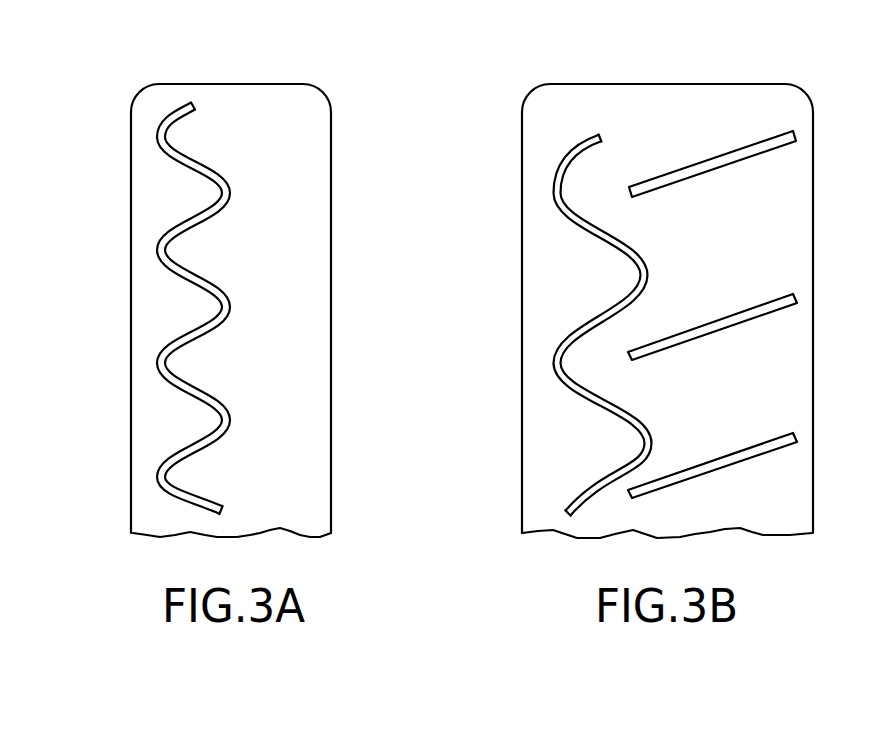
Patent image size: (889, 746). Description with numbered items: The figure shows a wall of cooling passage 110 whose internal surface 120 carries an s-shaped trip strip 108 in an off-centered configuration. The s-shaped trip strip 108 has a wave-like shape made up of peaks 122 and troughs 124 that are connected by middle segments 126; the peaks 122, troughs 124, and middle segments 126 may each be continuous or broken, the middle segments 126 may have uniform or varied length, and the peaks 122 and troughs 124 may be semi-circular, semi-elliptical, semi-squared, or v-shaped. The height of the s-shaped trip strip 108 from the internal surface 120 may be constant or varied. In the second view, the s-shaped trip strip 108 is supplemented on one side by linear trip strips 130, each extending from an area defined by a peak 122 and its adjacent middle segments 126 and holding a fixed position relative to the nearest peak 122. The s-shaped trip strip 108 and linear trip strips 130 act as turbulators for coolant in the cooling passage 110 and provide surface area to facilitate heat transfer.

In FIG. 3A, the s-shaped trip strip 108 is at (184, 172).
In FIG. 3A, the cooling passage 110 is at (288, 112).
In FIG. 3B, the cooling passage 110 is at (798, 177).
In FIG. 3A, the internal surface 120 is at (290, 193).
In FIG. 3B, the internal surface 120 is at (737, 255).
In FIG. 3A, the peaks 122 is at (156, 140).
In FIG. 3B, the peaks 122 is at (552, 182).
In FIG. 3A, the troughs 124 is at (230, 188).
In FIG. 3B, the troughs 124 is at (646, 243).
In FIG. 3A, the middle segments 126 is at (198, 229).
In FIG. 3B, the middle segments 126 is at (590, 237).
In FIG. 3B, the linear trip strips 130 is at (720, 158).